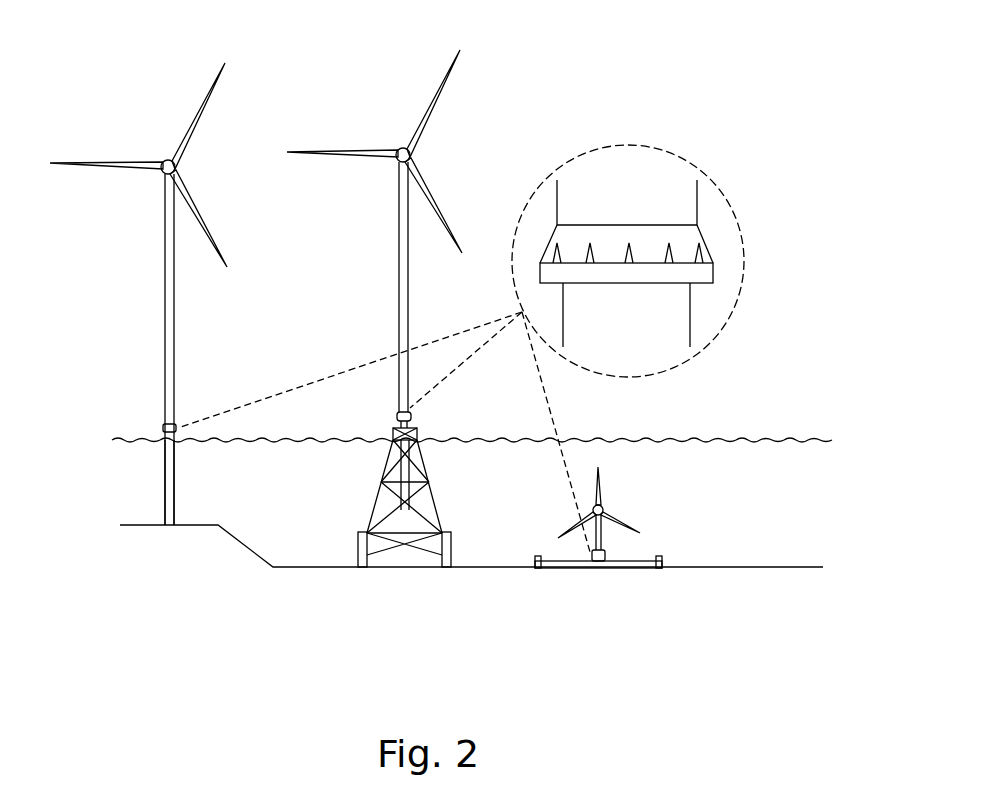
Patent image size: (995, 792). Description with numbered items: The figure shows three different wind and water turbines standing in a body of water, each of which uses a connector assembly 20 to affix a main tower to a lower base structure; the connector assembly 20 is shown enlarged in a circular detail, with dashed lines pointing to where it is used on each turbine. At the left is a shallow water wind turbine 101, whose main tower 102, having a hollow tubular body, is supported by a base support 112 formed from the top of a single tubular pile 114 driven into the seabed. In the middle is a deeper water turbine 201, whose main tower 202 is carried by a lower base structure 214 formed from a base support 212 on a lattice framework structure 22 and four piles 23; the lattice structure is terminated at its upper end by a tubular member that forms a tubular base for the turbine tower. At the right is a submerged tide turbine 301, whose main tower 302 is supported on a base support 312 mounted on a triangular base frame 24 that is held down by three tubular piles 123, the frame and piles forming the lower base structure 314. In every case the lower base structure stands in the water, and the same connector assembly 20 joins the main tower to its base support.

The shallow water wind turbine 101 is at (138, 294).
The main tower 102 is at (165, 332).
The base support 112 is at (165, 433).
The tubular pile 114 is at (165, 483).
The deeper water turbine 201 is at (374, 231).
The main tower 202 is at (399, 323).
The base support 212 is at (396, 426).
The lattice framework structure 22 is at (371, 506).
The lower base structure 214 is at (384, 529).
The piles 23 is at (450, 537).
The tubular piles 123 is at (527, 561).
The triangular base frame 24 is at (610, 534).
The submerged tide turbine 301 is at (644, 510).
The main tower 302 is at (603, 537).
The base support 312 is at (610, 558).
The lower base structure 314 is at (672, 561).
The connector assembly 20 is at (710, 218).